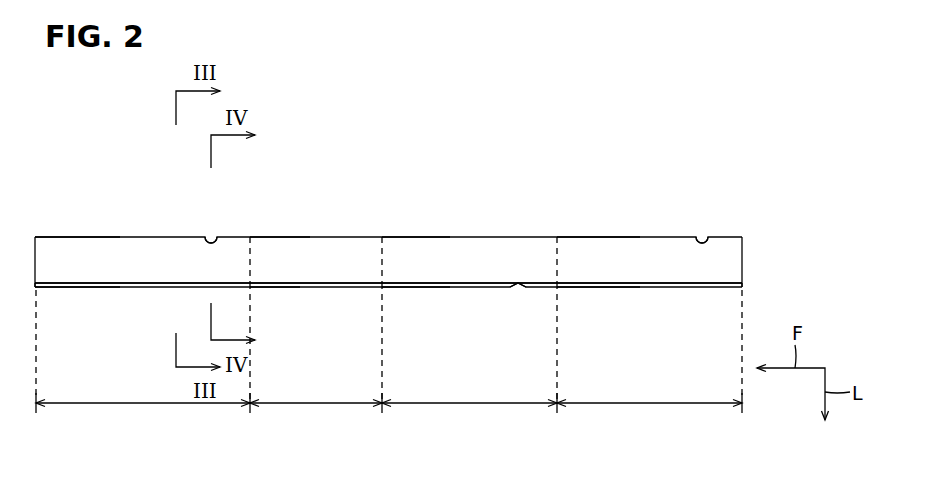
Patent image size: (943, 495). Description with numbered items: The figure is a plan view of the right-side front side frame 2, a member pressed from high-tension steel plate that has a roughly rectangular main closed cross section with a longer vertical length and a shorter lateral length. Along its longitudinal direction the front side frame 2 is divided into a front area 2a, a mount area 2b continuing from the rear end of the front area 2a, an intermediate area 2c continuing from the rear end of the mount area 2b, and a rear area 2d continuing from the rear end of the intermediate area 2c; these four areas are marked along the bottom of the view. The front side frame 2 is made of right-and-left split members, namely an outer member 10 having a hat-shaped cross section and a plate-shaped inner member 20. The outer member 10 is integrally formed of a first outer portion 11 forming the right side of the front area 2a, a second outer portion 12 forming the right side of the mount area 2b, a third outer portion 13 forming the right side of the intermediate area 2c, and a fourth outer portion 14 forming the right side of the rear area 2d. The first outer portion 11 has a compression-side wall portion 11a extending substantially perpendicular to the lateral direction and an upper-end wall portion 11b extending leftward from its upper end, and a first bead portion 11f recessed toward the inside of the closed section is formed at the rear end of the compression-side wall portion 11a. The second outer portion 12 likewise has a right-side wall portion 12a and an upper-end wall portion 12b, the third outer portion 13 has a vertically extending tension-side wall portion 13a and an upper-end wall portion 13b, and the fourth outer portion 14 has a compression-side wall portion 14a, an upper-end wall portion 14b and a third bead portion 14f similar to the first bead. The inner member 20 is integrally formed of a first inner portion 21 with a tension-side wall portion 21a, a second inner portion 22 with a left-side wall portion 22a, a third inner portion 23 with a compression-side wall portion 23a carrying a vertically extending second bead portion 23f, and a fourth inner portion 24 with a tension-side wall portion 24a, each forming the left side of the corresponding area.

The front side frame 2 is at (396, 182).
The front area 2a is at (145, 404).
The mount area 2b is at (318, 404).
The intermediate area 2c is at (472, 404).
The rear area 2d is at (647, 404).
The outer member 10 is at (388, 190).
The first outer portion 11 is at (142, 198).
The compression-side wall portion 11a is at (53, 236).
The upper-end wall portion 11b is at (94, 250).
The first bead portion 11f is at (211, 234).
The second outer portion 12 is at (316, 196).
The right-side wall portion 12a is at (268, 236).
The upper-end wall portion 12b is at (310, 250).
The third outer portion 13 is at (469, 195).
The tension-side wall portion 13a is at (411, 236).
The upper-end wall portion 13b is at (462, 250).
The fourth outer portion 14 is at (649, 198).
The compression-side wall portion 14a is at (576, 236).
The upper-end wall portion 14b is at (625, 250).
The third bead portion 14f is at (702, 234).
The inner member 20 is at (388, 336).
The first inner portion 21 is at (142, 316).
The tension-side wall portion 21a is at (63, 289).
The second inner portion 22 is at (316, 316).
The left-side wall portion 22a is at (275, 289).
The third inner portion 23 is at (469, 312).
The compression-side wall portion 23a is at (424, 289).
The second bead portion 23f is at (516, 286).
The fourth inner portion 24 is at (649, 318).
The tension-side wall portion 24a is at (627, 289).